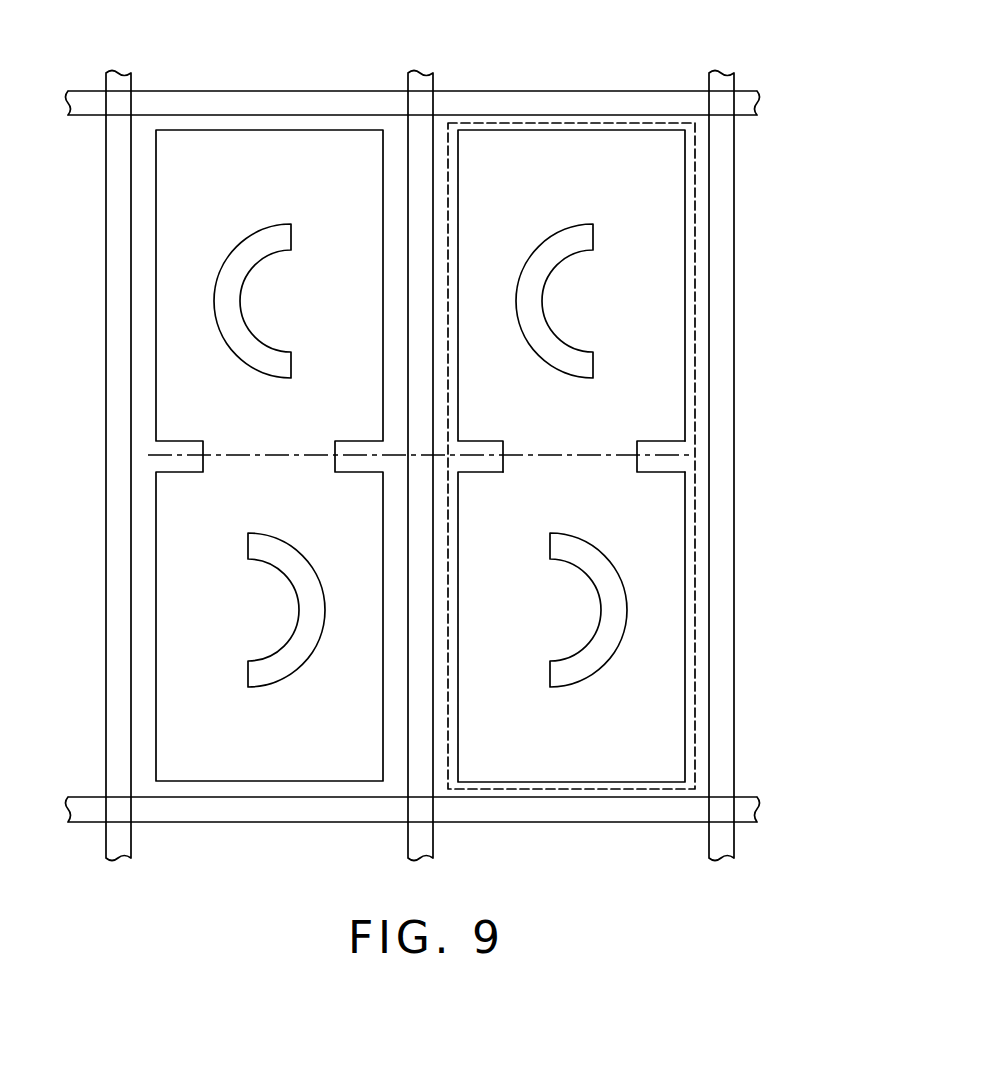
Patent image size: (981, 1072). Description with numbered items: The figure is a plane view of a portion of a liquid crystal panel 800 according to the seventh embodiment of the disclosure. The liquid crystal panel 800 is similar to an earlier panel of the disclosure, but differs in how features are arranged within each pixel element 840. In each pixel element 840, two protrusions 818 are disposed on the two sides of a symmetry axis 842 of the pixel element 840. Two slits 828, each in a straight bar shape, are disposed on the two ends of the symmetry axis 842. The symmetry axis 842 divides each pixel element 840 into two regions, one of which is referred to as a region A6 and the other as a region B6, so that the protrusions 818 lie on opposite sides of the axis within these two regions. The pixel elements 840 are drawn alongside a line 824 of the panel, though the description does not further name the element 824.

The liquid crystal panel 800 is at (444, 41).
The data line 824 is at (720, 415).
The pixel element 840 is at (698, 202).
The region A6 is at (650, 250).
The region B6 is at (638, 682).
The slit 828 is at (663, 463).
The protrusion 818 is at (543, 337).
The symmetry axis 842 is at (617, 455).